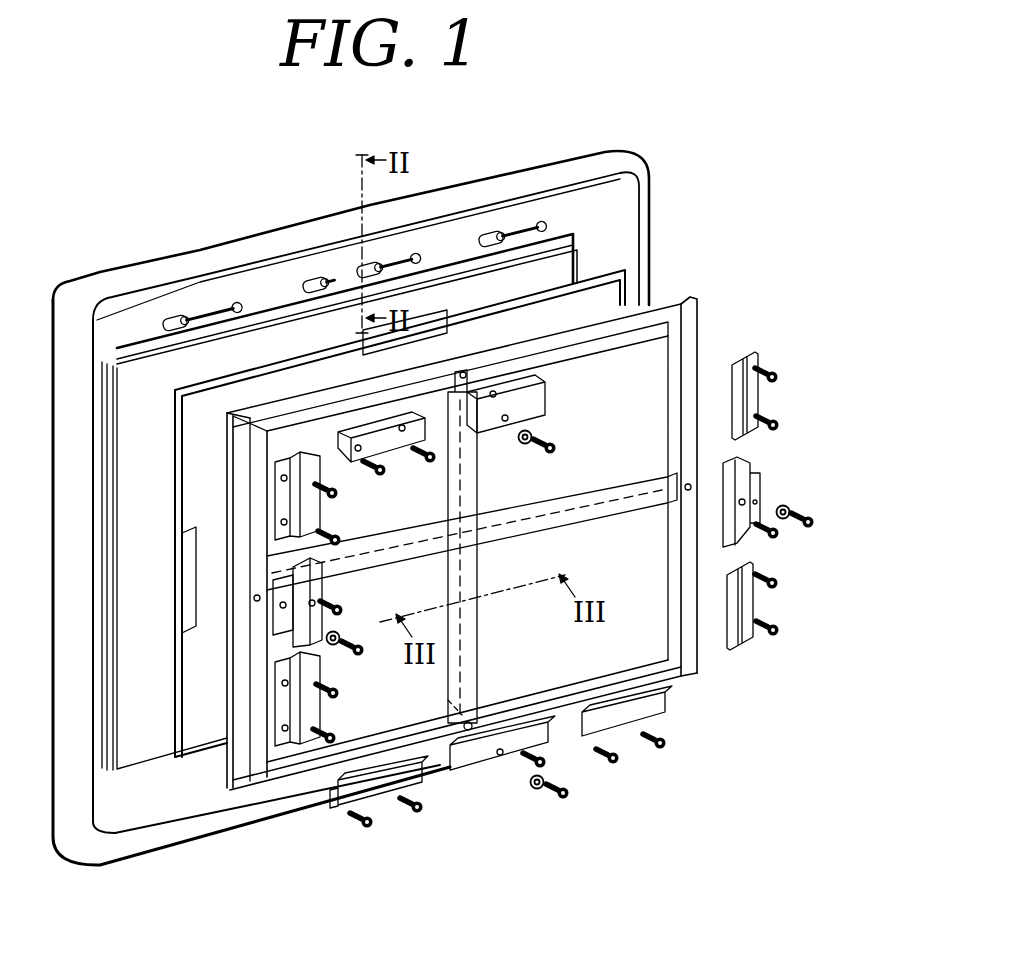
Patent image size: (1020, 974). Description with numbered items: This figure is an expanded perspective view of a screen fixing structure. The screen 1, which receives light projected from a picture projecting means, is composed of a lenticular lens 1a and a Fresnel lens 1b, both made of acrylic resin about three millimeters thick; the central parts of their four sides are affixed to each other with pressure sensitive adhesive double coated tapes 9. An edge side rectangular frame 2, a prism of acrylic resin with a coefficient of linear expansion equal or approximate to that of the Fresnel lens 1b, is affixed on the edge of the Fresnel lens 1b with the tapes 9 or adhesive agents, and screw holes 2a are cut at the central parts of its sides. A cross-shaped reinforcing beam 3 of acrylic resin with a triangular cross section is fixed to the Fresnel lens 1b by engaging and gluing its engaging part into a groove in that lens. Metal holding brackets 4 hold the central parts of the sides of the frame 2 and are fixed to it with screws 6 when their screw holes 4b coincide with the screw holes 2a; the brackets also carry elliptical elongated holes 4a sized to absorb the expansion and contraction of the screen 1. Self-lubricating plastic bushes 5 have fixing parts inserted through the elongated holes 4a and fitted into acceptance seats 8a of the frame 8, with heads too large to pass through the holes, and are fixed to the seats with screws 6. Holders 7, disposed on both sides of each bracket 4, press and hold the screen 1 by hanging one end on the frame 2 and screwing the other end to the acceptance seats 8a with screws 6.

The screen 1 is at (498, 514).
The lenticular lens 1a is at (630, 284).
The Fresnel lens 1b is at (677, 340).
The edge side rectangular frame 2 is at (690, 670).
The screw holes 2a is at (463, 372).
The reinforcing beam 3 is at (448, 712).
The holding brackets 4 is at (483, 437).
The elongated holes 4a is at (510, 391).
The screw holes 4b is at (503, 421).
The bushes 5 is at (532, 437).
The screws 6 is at (338, 500).
The holders 7 is at (308, 468).
The frame 8 is at (612, 160).
The acceptance seats 8a is at (190, 298).
The pressure sensitive adhesive double coated tapes 9 is at (424, 327).